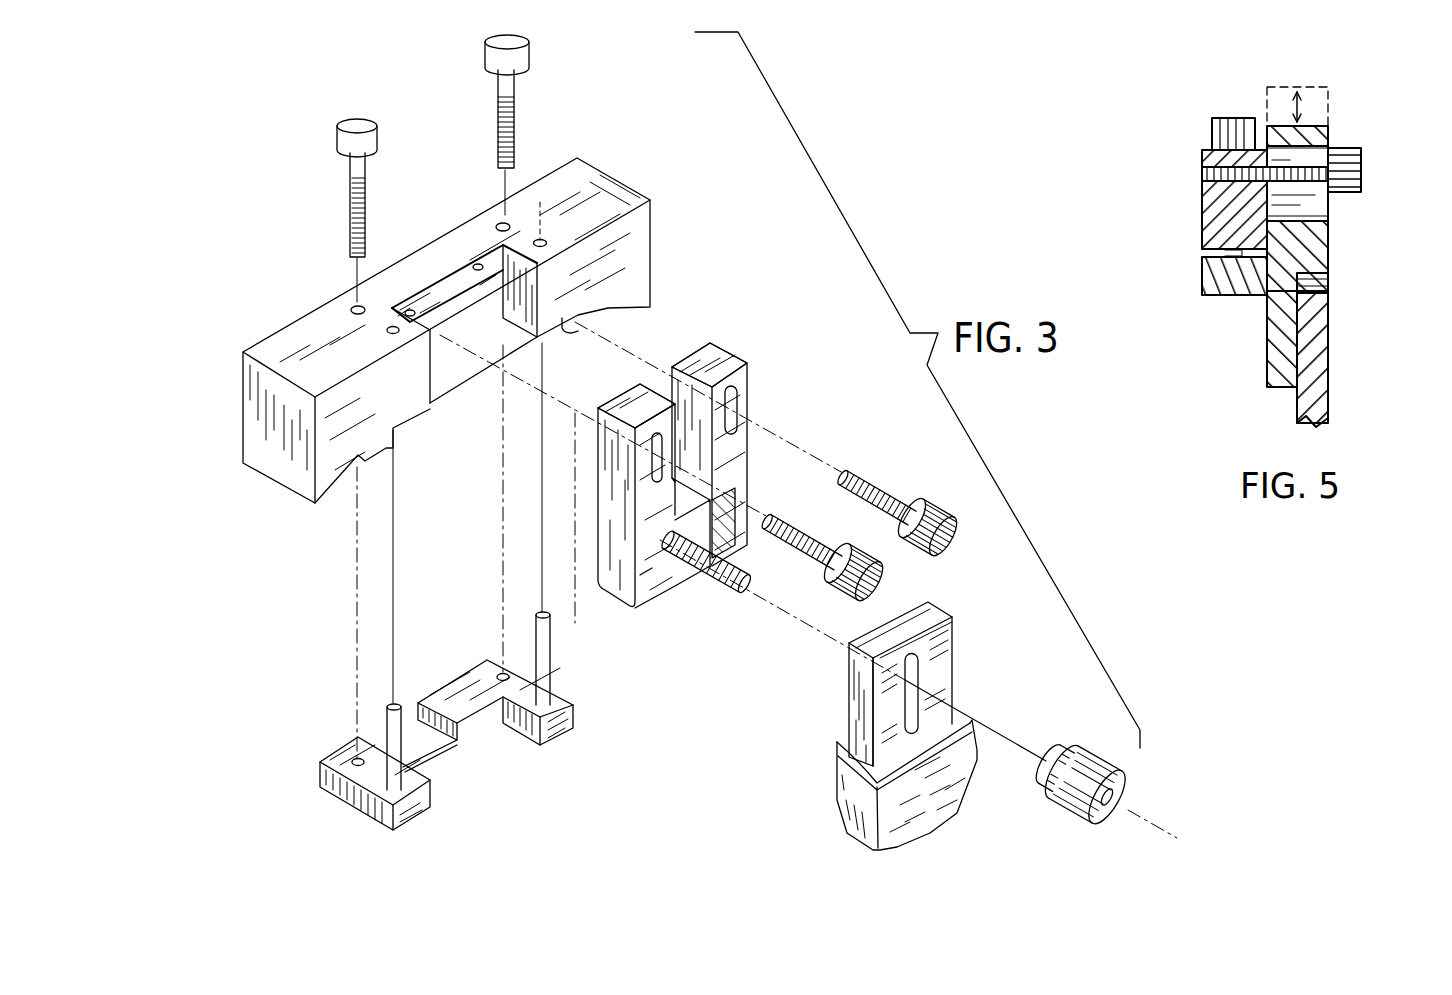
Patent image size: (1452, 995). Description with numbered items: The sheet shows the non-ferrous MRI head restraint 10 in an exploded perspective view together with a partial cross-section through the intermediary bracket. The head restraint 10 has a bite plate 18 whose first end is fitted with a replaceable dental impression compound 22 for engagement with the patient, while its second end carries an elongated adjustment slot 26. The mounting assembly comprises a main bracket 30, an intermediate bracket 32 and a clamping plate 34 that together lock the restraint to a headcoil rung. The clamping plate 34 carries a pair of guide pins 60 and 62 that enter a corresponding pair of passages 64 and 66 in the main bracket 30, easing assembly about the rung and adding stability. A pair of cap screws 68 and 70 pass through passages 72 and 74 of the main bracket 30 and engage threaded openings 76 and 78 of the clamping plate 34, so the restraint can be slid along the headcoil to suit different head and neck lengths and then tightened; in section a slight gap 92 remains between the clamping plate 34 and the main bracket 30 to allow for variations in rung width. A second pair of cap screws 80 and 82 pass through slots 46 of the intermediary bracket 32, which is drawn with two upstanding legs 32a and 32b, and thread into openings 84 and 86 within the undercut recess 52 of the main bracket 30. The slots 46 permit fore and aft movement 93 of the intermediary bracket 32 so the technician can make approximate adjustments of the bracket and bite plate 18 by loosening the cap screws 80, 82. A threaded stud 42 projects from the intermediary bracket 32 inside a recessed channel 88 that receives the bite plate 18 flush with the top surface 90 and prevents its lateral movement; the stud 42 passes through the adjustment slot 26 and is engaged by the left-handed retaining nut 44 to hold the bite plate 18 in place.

In FIG. 3, the head restraint 10 is at (308, 183).
In FIG. 3, the bite plate 18 is at (857, 719).
In FIG. 5, the bite plate 18 is at (1320, 360).
In FIG. 3, the dental impression compound 22 is at (846, 790).
In FIG. 3, the adjustment slot 26 is at (918, 721).
In FIG. 3, the main bracket 30 is at (632, 268).
In FIG. 5, the main bracket 30 is at (1208, 230).
In FIG. 3, the intermediate bracket 32 is at (742, 453).
In FIG. 5, the intermediate bracket 32 is at (1332, 262).
In FIG. 3, the front leg of bracket 32a is at (640, 392).
In FIG. 3, the rear leg of bracket 32b is at (714, 352).
In FIG. 3, the clamping plate 34 is at (553, 737).
In FIG. 5, the clamping plate 34 is at (1246, 290).
In FIG. 3, the threaded stud 42 is at (720, 584).
In FIG. 3, the retaining nut 44 is at (1068, 810).
In FIG. 3, the slots 46 is at (660, 450).
In FIG. 5, the slots 46 is at (1345, 205).
In FIG. 3, the undercut recess 52 is at (510, 258).
In FIG. 3, the guide pin 60 is at (432, 800).
In FIG. 3, the guide pin 62 is at (551, 682).
In FIG. 3, the passage 64 is at (395, 333).
In FIG. 3, the passage 66 is at (546, 241).
In FIG. 3, the cap screw 68 is at (366, 178).
In FIG. 3, the cap screw 70 is at (513, 92).
In FIG. 5, the cap screw 70 is at (1232, 126).
In FIG. 3, the passage 72 is at (349, 307).
In FIG. 3, the passage 74 is at (498, 223).
In FIG. 3, the threaded opening 76 is at (355, 758).
In FIG. 3, the threaded opening 78 is at (500, 672).
In FIG. 3, the cap screw 80 is at (868, 573).
In FIG. 3, the cap screw 82 is at (934, 540).
In FIG. 5, the cap screw 82 is at (1354, 179).
In FIG. 3, the threaded opening 84 is at (392, 326).
In FIG. 3, the threaded opening 86 is at (473, 266).
In FIG. 3, the recessed channel 88 is at (660, 567).
In FIG. 3, the top surface 90 is at (745, 507).
In FIG. 5, the gap 92 is at (1200, 254).
In FIG. 5, the fore and aft movement 93 is at (1300, 115).